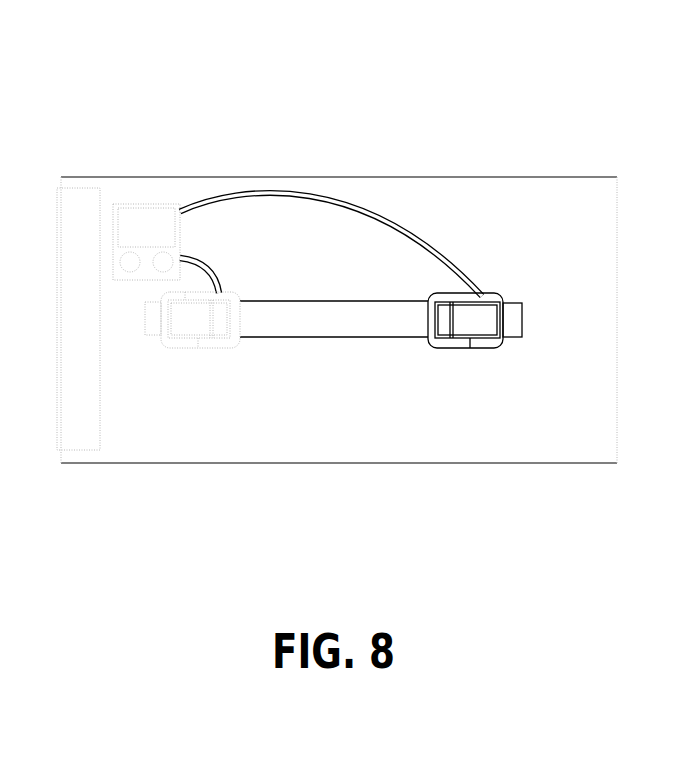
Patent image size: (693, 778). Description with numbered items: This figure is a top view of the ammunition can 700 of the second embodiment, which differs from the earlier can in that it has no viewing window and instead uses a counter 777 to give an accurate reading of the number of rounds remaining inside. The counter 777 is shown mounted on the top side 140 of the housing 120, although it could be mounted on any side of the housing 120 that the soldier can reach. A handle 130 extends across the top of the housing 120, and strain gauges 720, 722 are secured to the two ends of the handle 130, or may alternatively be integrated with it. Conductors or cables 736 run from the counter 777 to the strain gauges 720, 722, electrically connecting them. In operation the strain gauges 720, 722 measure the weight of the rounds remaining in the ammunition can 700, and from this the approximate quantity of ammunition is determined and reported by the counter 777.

The ammunition can 700 is at (347, 70).
The housing 120 is at (339, 298).
The top side 140 is at (583, 228).
The counter 777 is at (126, 210).
The conductors or cables 736 is at (282, 194).
The strain gauge 720 is at (198, 420).
The handle 130 is at (334, 424).
The strain gauge 722 is at (477, 420).